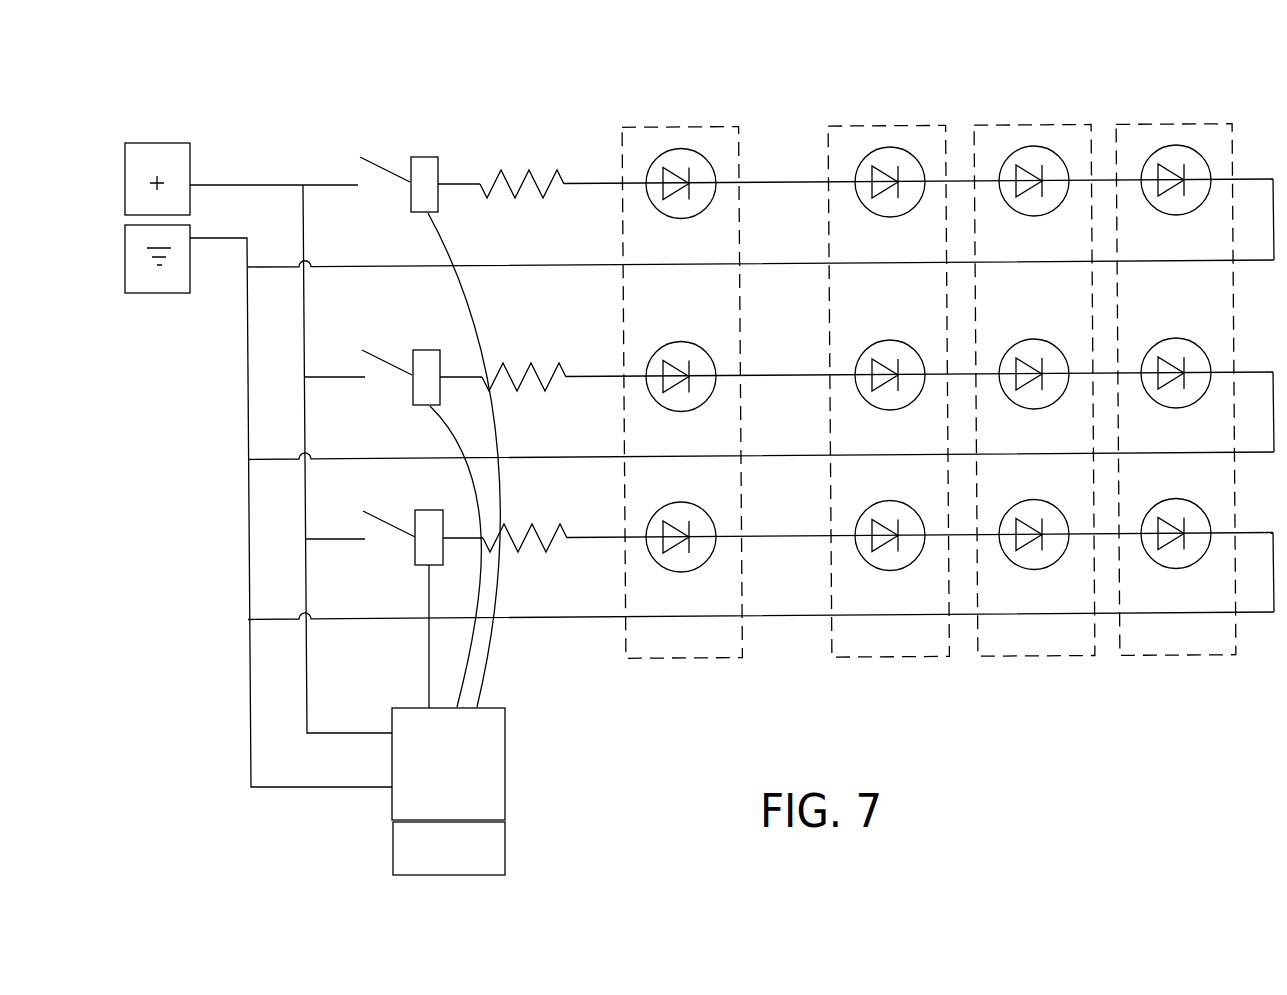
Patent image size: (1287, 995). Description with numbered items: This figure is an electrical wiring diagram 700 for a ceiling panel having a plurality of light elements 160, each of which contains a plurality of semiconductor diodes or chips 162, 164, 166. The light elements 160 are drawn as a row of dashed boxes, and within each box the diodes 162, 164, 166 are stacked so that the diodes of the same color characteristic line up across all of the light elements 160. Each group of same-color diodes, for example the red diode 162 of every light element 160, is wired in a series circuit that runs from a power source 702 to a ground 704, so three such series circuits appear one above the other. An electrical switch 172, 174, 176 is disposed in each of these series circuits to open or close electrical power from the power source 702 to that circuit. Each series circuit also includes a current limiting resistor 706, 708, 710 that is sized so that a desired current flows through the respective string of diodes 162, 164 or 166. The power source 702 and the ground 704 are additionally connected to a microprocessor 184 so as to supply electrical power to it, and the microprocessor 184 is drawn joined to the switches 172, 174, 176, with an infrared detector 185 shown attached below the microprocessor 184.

The electrical wiring diagram 700 is at (352, 80).
The power source 702 is at (152, 143).
The ground 704 is at (153, 293).
The electrical switch 172 is at (423, 157).
The electrical switch 174 is at (432, 350).
The electrical switch 176 is at (432, 510).
The current limiting resistor 706 is at (516, 198).
The current limiting resistor 708 is at (545, 391).
The current limiting resistor 710 is at (547, 549).
The light element 160 is at (650, 122).
The semiconductor diode 162 is at (697, 152).
The semiconductor diode 164 is at (710, 350).
The semiconductor diode 166 is at (710, 512).
The microprocessor 184 is at (505, 742).
The IR detector 185 is at (508, 837).